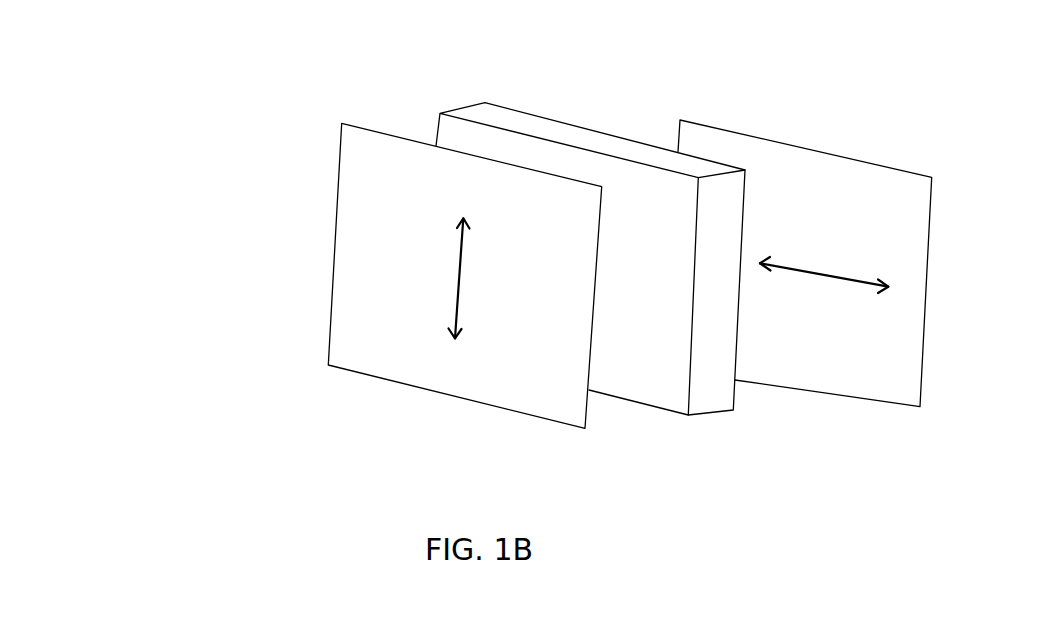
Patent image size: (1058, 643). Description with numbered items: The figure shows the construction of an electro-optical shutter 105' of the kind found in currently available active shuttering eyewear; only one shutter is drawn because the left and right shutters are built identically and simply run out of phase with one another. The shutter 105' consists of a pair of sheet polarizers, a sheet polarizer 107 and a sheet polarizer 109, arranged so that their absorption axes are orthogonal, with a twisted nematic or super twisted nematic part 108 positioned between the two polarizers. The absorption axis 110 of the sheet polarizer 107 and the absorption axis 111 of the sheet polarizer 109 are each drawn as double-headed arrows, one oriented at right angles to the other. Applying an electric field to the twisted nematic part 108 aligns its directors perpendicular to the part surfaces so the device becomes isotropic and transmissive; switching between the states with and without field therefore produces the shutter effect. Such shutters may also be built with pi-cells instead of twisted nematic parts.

The electro-optical shutter 105' is at (131, 144).
The sheet polarizer 107 is at (467, 372).
The twisted nematic part 108 is at (649, 374).
The sheet polarizer 109 is at (827, 360).
The absorption axis 110 is at (432, 283).
The absorption axis 111 is at (824, 255).